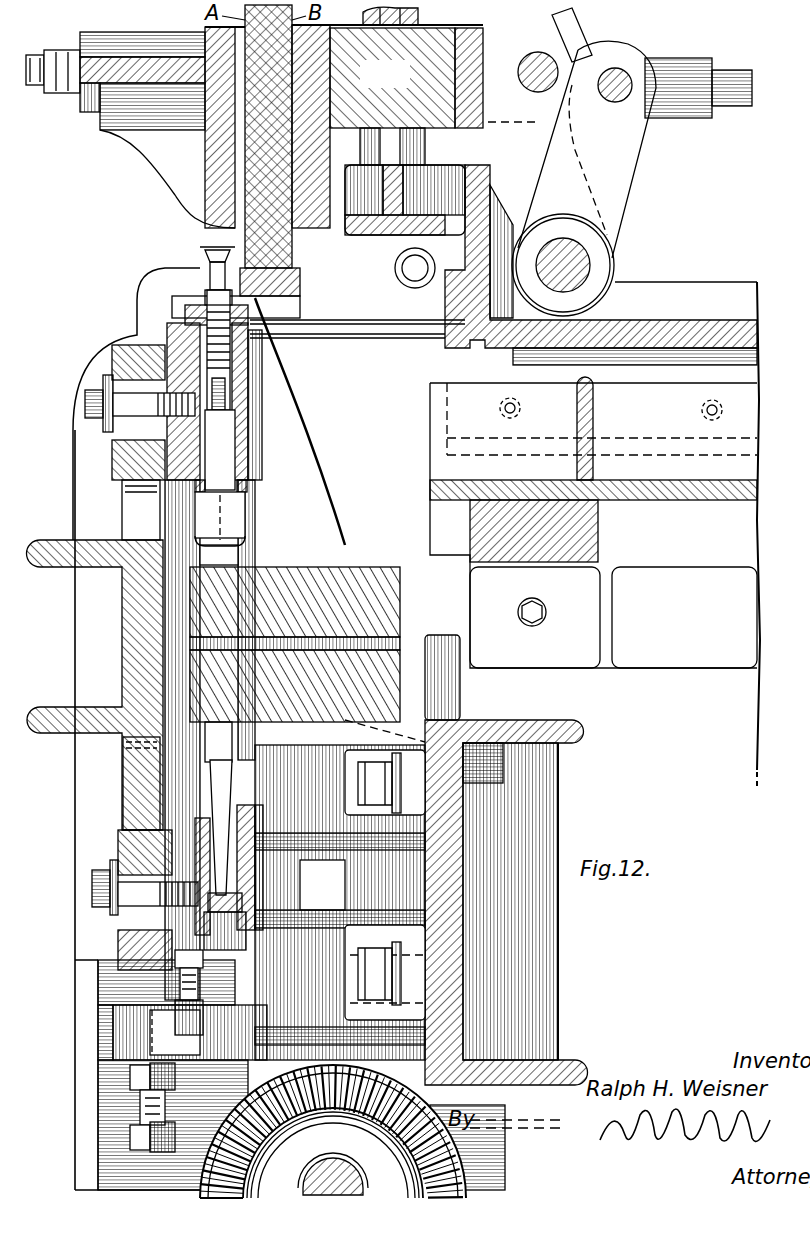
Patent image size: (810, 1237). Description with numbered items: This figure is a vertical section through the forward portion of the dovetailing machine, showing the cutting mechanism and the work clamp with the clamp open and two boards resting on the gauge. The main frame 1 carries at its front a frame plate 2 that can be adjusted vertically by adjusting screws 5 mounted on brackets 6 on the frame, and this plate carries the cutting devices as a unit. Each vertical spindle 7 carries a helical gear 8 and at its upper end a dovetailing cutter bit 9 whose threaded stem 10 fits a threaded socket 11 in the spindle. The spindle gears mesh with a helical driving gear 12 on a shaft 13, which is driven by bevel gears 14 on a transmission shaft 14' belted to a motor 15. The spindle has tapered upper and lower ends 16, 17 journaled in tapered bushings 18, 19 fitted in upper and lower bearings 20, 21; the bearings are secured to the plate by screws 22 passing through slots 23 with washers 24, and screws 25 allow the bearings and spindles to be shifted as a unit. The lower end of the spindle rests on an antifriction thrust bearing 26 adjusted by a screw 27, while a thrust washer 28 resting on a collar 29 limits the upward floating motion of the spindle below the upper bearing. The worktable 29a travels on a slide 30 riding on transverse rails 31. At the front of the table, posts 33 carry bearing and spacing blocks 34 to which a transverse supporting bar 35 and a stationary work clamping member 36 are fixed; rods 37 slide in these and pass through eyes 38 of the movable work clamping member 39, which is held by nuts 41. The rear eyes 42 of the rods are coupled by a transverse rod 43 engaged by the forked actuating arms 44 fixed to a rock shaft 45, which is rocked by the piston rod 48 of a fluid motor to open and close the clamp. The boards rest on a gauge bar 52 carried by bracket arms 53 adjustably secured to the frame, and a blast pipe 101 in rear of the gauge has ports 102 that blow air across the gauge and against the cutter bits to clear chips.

The main frame 1 is at (575, 736).
The frame plate 2 is at (128, 620).
The adjusting screws 5 is at (125, 993).
The brackets 6 is at (125, 1040).
The spindle 7 is at (228, 562).
The helical gear 8 is at (200, 676).
The dovetailing cutter bit 9 is at (203, 249).
The threaded stem 10 is at (231, 352).
The threaded socket 11 is at (228, 380).
The helical driving gear 12 is at (398, 690).
The shaft 13 is at (368, 862).
The bevel gears 14 is at (380, 1131).
The transmission shaft 14' is at (333, 1163).
The motor 15 is at (372, 960).
The tapered upper end 16 is at (250, 400).
The tapered lower end 17 is at (222, 802).
The upper tapered bushing 18 is at (200, 334).
The lower tapered bushing 19 is at (252, 836).
The upper bearing 20 is at (256, 424).
The lower bearing 21 is at (196, 826).
The screws 22 is at (140, 406).
The slots 23 is at (125, 365).
The washers 24 is at (103, 384).
The screws 25 is at (200, 1006).
The antifriction thrust bearing 26 is at (246, 906).
The screw 27 is at (252, 956).
The thrust washer 28 is at (248, 490).
The collar 29 is at (242, 516).
The worktable 29a is at (680, 330).
The slide 30 is at (740, 485).
The transverse rails 31 is at (585, 530).
The posts 33 is at (419, 17).
The bearing and spacing blocks 34 is at (387, 76).
The transverse supporting bar 35 is at (476, 116).
The stationary work clamping member 36 is at (313, 224).
The rods 37 is at (40, 88).
The eyes 38 is at (92, 114).
The movable work clamping member 39 is at (212, 150).
The nuts 41 is at (66, 96).
The eyes 42 is at (590, 44).
The transverse rod 43 is at (545, 96).
The actuating arms 44 is at (585, 28).
The transverse rock shaft 45 is at (590, 264).
The piston rod 48 is at (732, 106).
The gauge bar 52 is at (256, 288).
The bracket arms 53 is at (160, 268).
The cleaner or blast pipe 101 is at (405, 286).
The ports 102 is at (398, 266).